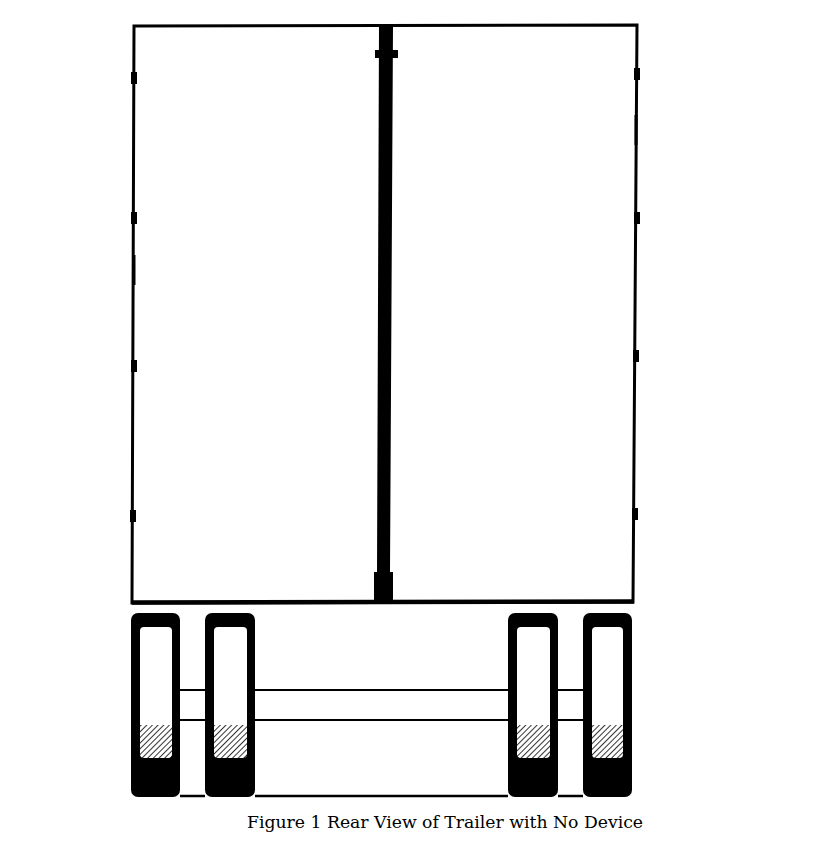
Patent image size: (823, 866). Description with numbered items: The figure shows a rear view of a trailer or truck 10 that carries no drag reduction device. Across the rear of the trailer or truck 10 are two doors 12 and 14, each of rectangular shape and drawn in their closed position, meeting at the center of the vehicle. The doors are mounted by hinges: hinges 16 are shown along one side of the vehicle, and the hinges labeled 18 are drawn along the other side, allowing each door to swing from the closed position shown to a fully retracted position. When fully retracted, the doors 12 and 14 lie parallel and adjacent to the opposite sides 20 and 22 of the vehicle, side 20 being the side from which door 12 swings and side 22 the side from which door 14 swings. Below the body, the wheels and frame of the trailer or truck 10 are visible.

The trailer or truck 10 is at (695, 428).
The door 12 is at (165, 292).
The door 14 is at (600, 295).
The hinges 16 is at (134, 77).
The right door hinges 18 is at (637, 74).
The side of the vehicle 20 is at (134, 268).
The side of the vehicle 22 is at (637, 130).